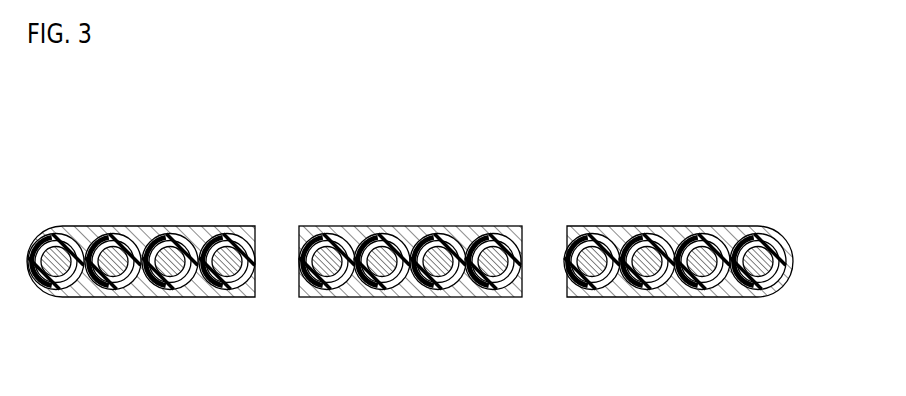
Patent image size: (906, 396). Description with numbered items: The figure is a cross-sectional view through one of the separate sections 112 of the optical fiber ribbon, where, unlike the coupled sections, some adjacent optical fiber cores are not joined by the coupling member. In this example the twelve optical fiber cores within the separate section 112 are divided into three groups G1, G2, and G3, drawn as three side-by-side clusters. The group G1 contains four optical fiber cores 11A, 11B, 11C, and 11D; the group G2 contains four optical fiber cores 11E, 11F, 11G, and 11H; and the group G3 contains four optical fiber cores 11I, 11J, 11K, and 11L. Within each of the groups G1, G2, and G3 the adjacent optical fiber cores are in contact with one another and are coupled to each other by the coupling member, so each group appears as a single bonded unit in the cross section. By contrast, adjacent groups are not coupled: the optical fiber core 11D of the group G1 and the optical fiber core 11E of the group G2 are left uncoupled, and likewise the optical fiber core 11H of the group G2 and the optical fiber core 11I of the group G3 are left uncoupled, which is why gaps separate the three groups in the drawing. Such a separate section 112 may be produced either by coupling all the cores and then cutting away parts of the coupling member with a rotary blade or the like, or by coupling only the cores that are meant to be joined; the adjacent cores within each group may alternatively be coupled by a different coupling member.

The separate section 112 is at (607, 141).
The group G1 is at (145, 298).
The group G2 is at (410, 298).
The group G3 is at (675, 298).
The optical fiber core 11A is at (53, 227).
The optical fiber core 11B is at (107, 227).
The optical fiber core 11C is at (162, 227).
The optical fiber core 11D is at (217, 227).
The optical fiber core 11E is at (318, 227).
The optical fiber core 11F is at (375, 227).
The optical fiber core 11G is at (432, 227).
The optical fiber core 11H is at (486, 227).
The optical fiber core 11I is at (586, 227).
The optical fiber core 11J is at (642, 227).
The optical fiber core 11K is at (696, 227).
The optical fiber core 11L is at (753, 227).